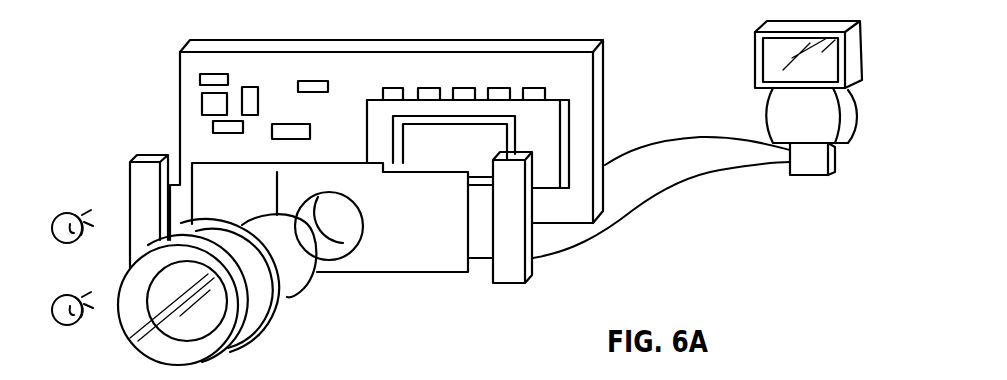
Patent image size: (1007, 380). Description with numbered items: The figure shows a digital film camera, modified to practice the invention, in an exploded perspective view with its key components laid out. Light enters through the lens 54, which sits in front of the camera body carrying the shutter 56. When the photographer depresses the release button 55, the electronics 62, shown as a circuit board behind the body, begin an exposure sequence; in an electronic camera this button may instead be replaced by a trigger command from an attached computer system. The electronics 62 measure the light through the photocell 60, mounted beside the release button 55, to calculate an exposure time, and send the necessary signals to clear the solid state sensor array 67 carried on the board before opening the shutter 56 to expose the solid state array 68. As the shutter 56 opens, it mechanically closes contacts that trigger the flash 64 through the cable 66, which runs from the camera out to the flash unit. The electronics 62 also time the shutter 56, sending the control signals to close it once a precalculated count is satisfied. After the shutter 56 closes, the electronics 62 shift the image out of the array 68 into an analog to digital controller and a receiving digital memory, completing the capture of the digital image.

The lens 54 is at (270, 333).
The release button 55 is at (73, 212).
The shutter 56 is at (444, 275).
The photocell 60 is at (72, 296).
The electronics 62 is at (361, 40).
The flash 64 is at (864, 70).
The cable 66 is at (697, 180).
The solid state sensor array 67 is at (507, 132).
The solid state array 68 is at (684, 137).